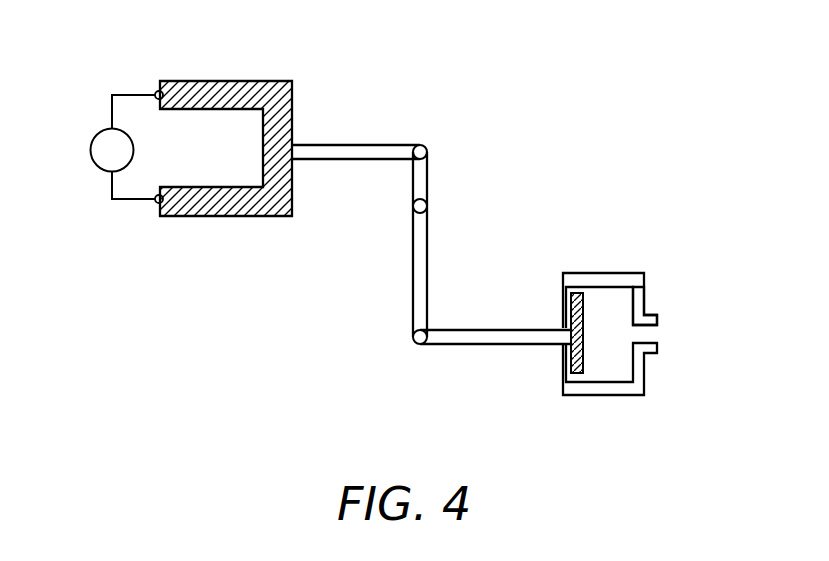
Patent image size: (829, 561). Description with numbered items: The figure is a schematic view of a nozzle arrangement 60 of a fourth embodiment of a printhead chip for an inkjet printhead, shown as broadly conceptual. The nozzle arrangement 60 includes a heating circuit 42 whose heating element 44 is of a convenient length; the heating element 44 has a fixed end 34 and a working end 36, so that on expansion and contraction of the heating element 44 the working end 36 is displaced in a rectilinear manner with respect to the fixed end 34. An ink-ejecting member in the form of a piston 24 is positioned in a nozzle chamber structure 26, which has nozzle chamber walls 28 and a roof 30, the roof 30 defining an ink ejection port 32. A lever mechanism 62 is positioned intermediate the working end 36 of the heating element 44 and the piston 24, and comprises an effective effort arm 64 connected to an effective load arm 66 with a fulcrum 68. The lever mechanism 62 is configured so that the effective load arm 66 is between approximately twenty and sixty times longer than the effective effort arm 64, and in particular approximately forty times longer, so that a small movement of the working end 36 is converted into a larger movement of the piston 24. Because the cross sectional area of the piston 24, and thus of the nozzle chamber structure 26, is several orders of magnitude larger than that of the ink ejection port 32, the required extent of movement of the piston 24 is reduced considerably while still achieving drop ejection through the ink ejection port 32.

The piston 24 is at (583, 362).
The nozzle chamber structure 26 is at (608, 360).
The nozzle chamber walls 28 is at (608, 272).
The roof 30 is at (645, 285).
The ink ejection port 32 is at (671, 332).
The fixed end 34 is at (158, 91).
The working end 36 is at (286, 80).
The heating circuit 42 is at (122, 93).
The heating element 44 is at (222, 80).
The nozzle arrangement 60 is at (564, 107).
The lever mechanism 62 is at (508, 209).
The effective effort arm 64 is at (432, 167).
The effective load arm 66 is at (429, 268).
The fulcrum 68 is at (413, 207).